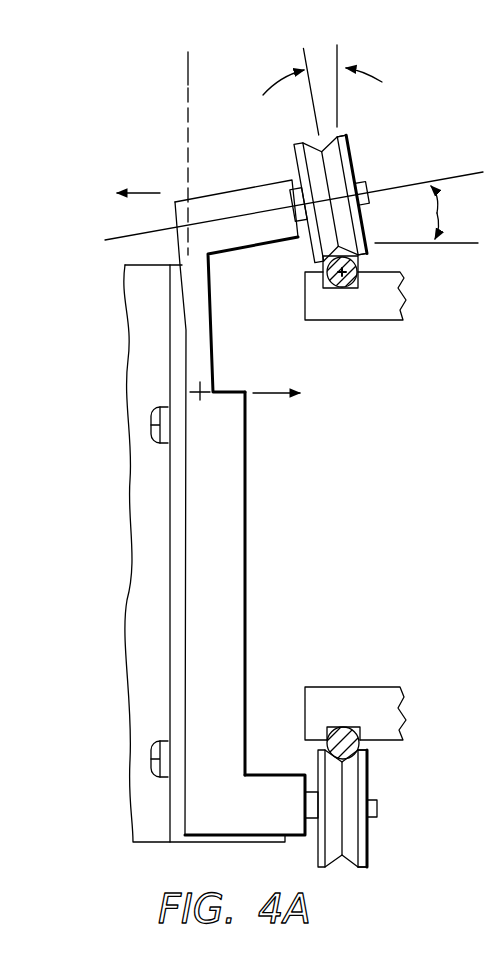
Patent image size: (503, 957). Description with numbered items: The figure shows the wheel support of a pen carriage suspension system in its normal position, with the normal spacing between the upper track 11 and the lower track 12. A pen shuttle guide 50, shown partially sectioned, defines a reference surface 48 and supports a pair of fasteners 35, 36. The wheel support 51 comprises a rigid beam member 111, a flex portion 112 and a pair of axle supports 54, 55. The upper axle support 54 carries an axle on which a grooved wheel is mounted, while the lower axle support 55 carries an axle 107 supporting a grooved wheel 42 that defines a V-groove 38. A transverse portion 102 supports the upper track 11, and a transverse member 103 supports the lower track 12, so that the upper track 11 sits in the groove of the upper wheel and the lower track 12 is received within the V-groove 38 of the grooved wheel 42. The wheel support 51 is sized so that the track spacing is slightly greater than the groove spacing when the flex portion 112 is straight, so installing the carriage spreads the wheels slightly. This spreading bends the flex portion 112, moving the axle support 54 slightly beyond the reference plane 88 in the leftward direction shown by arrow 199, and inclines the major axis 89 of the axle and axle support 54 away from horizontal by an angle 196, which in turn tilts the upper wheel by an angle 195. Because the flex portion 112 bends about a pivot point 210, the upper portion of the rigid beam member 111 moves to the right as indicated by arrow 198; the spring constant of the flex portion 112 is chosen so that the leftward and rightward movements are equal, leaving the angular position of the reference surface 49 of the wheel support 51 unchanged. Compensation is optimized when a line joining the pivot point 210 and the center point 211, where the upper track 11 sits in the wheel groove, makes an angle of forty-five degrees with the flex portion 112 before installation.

The upper track 11 is at (367, 262).
The lower track 12 is at (362, 743).
The fastener 35 is at (150, 748).
The fastener 36 is at (155, 437).
The V-groove 38 is at (384, 826).
The grooved wheel 42 is at (370, 837).
The reference surface 48 is at (246, 484).
The reference surface 49 is at (178, 572).
The pen shuttle guide 50 is at (140, 370).
The wheel support 51 is at (262, 635).
The axle support 54 is at (250, 193).
The axle support 55 is at (270, 790).
The reference plane 88 is at (188, 95).
The major axis 89 is at (462, 173).
The transverse portion 102 is at (387, 297).
The transverse member 103 is at (377, 695).
The axle 107 is at (377, 812).
The rigid beam member 111 is at (228, 680).
The flex portion 112 is at (198, 313).
The angle 195 is at (320, 58).
The angle 196 is at (438, 213).
The arrow 198 is at (282, 368).
The arrow 199 is at (141, 174).
The pivot point 210 is at (203, 387).
The center point 211 is at (320, 277).